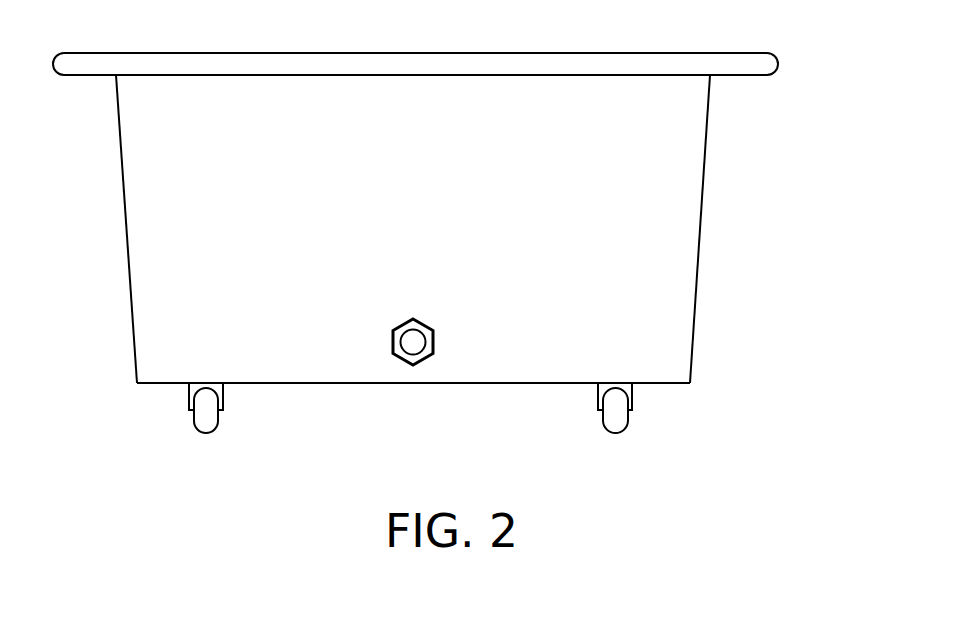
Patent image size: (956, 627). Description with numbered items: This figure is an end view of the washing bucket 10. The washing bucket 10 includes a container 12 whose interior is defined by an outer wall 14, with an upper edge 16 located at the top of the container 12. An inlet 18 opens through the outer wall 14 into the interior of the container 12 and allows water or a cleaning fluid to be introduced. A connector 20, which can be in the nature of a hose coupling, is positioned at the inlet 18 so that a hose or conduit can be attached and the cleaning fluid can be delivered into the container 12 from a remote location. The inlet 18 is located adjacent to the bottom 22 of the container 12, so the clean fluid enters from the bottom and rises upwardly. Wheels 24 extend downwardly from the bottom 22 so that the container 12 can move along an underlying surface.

The washing bucket 10 is at (752, 237).
The container 12 is at (123, 192).
The outer wall 14 is at (683, 144).
The upper edge 16 is at (778, 62).
The inlet 18 is at (408, 330).
The connector 20 is at (432, 330).
The bottom 22 is at (552, 383).
The wheels 24 is at (220, 412).